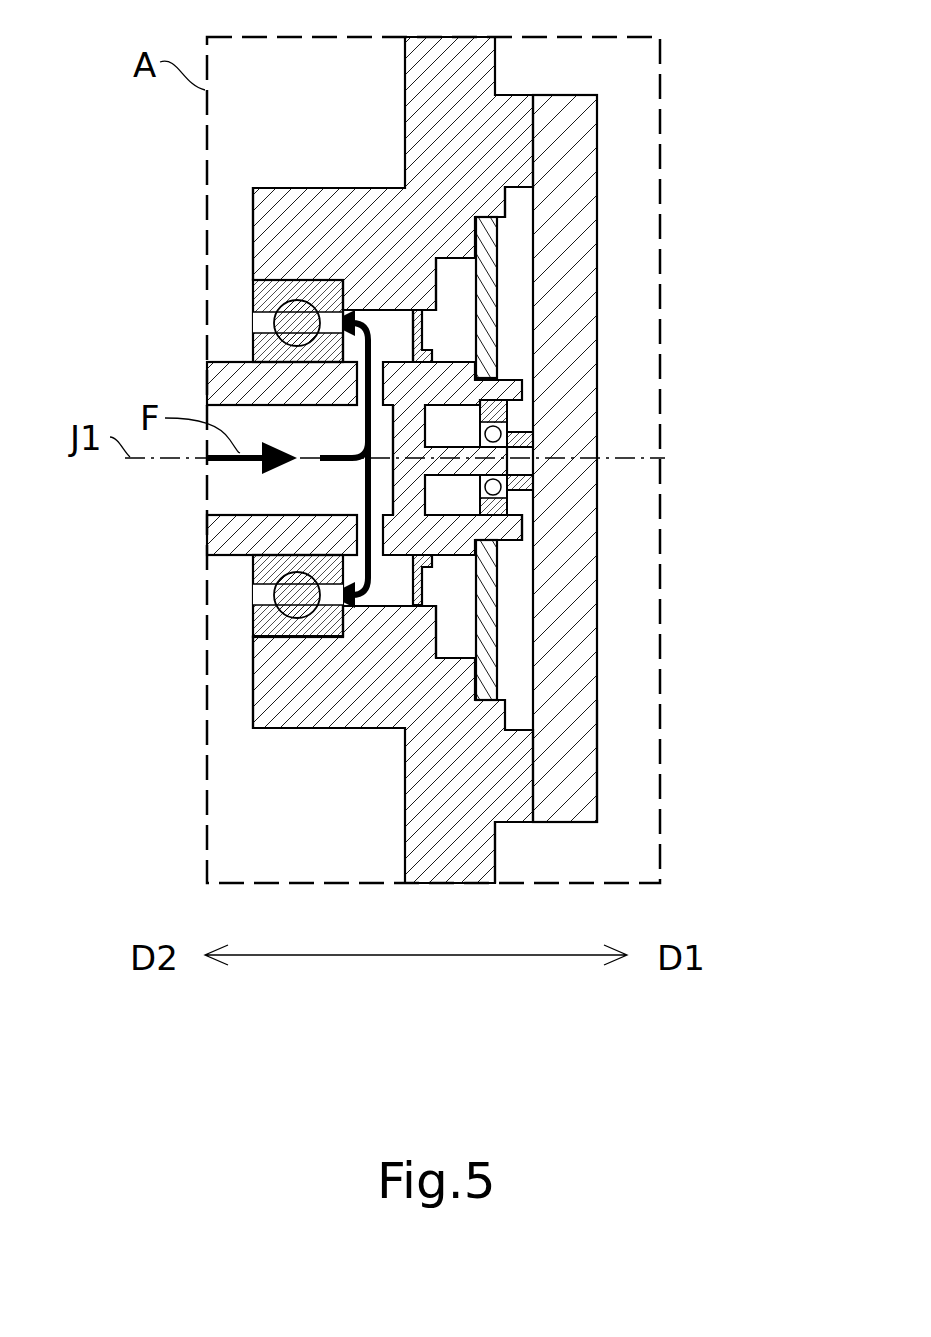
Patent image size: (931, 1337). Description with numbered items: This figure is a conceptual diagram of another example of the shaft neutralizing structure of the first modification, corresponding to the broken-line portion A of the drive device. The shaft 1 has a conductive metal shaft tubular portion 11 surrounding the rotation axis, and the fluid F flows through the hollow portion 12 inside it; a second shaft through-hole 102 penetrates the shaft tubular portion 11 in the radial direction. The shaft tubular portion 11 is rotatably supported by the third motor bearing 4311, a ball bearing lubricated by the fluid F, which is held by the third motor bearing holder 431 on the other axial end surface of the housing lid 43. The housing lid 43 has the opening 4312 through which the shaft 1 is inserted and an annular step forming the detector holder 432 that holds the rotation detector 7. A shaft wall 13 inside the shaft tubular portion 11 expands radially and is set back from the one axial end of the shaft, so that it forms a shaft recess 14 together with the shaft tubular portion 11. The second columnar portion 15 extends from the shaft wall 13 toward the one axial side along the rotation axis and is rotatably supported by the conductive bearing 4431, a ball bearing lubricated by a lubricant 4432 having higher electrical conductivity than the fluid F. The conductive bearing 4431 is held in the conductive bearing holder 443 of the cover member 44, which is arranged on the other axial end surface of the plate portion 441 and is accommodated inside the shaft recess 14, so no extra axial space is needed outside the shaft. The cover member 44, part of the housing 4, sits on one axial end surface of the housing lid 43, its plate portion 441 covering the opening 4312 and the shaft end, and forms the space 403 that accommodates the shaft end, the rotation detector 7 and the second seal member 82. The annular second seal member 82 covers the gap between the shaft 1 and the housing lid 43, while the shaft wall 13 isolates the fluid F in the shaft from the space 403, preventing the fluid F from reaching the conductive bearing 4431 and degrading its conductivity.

The shaft 1 is at (535, 397).
The housing 4 is at (557, 846).
The rotation detector 7 is at (422, 337).
The shaft tubular portion 11 is at (233, 533).
The hollow portion 12 is at (226, 500).
The shaft wall 13 is at (402, 488).
The shaft recess 14 is at (497, 507).
The second columnar portion 15 is at (505, 447).
The housing lid 43 is at (405, 857).
The cover member 44 is at (597, 693).
The second seal member 82 is at (487, 343).
The second shaft through-hole 102 is at (340, 391).
The space 403 is at (522, 674).
The third motor bearing holder 431 is at (272, 230).
The detector holder 432 is at (490, 203).
The plate portion 441 is at (567, 762).
The conductive bearing holder 443 is at (501, 532).
The third motor bearing 4311 is at (262, 298).
The opening 4312 is at (394, 300).
The conductive bearing 4431 is at (513, 477).
The lubricant 4432 is at (513, 490).